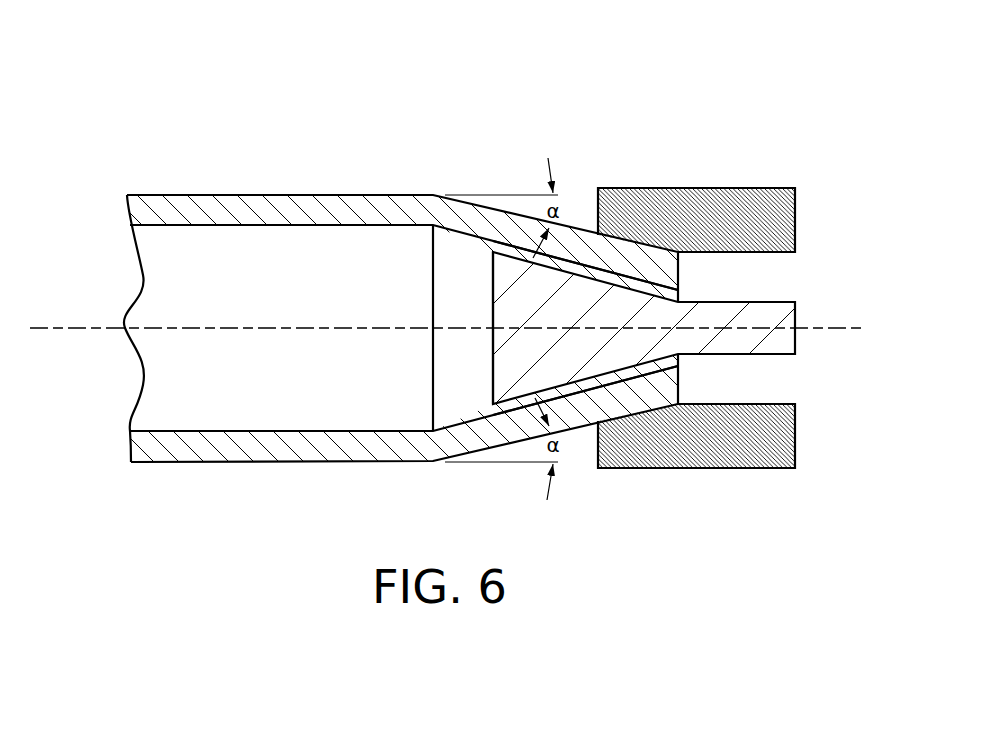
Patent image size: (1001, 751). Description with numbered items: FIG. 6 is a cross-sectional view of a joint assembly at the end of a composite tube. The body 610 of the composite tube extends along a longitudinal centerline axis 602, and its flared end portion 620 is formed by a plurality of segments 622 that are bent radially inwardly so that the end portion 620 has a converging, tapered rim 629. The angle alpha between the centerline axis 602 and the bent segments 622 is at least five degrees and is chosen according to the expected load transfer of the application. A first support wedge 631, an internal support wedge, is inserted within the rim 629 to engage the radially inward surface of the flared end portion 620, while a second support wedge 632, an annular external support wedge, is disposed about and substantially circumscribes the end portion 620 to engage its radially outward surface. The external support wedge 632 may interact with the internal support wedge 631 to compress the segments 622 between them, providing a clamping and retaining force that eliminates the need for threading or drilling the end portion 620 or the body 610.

The longitudinal centerline axis 602 is at (833, 328).
The body 610 is at (228, 212).
The flared end portion 620 is at (715, 110).
The plurality of segments 622 is at (568, 408).
The rim 629 is at (680, 383).
The first support wedge 631 is at (775, 342).
The second support wedge 632 is at (773, 212).